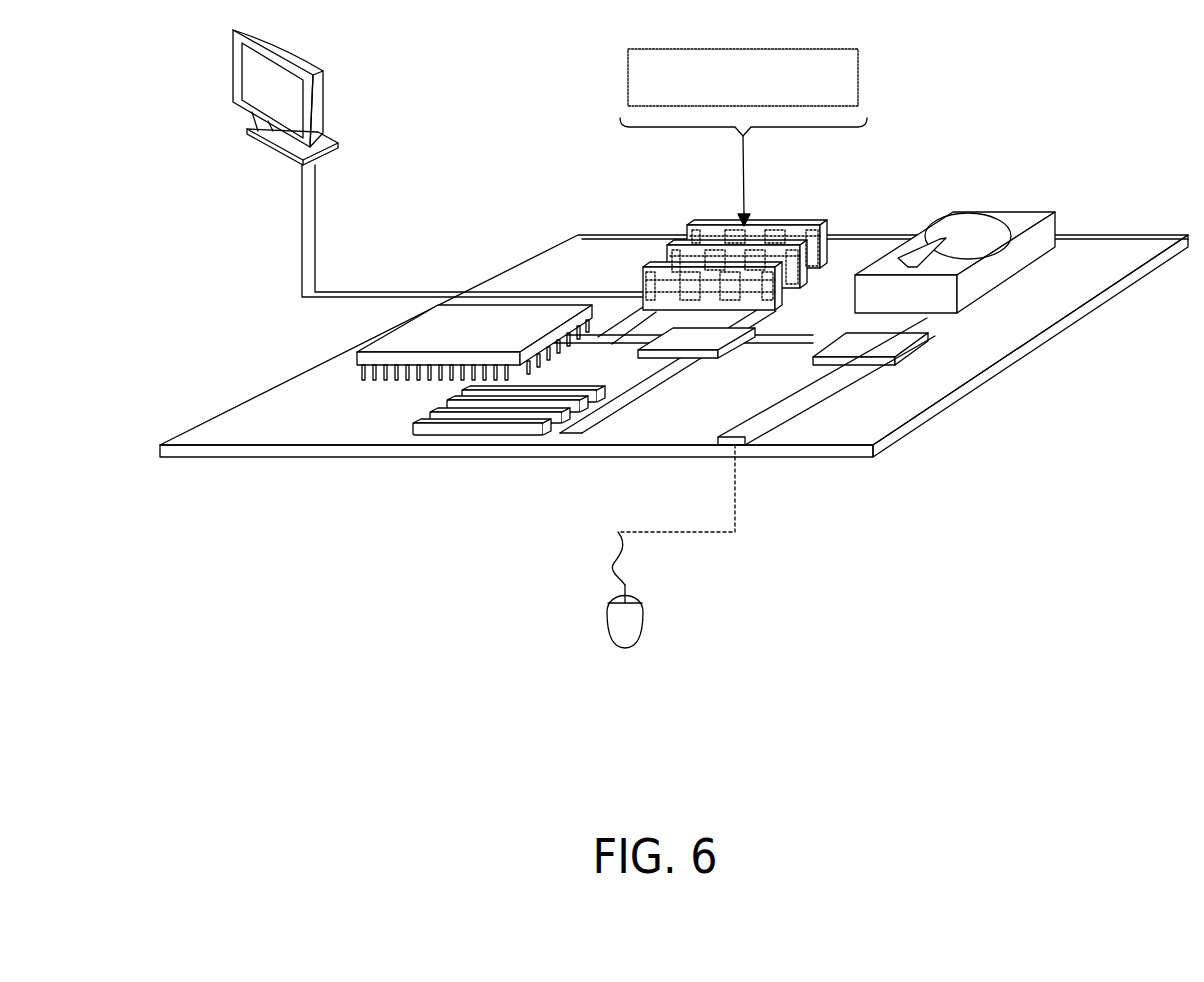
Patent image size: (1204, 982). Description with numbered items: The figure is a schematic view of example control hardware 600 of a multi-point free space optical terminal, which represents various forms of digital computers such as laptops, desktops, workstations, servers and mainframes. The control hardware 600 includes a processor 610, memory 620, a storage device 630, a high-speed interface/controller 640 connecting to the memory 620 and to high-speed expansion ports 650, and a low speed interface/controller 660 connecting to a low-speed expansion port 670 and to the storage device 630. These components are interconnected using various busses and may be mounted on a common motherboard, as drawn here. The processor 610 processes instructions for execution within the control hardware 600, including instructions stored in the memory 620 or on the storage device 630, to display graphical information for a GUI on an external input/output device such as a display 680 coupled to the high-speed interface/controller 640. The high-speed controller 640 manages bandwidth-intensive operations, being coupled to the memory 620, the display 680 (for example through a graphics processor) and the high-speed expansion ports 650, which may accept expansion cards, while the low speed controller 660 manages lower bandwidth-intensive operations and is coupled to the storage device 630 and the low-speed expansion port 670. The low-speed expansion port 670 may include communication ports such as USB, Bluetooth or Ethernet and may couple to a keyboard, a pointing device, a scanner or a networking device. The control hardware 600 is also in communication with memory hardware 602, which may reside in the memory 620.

The control hardware 600 is at (931, 86).
The memory hardware 602 is at (743, 49).
The processor 610 is at (357, 352).
The memory 620 is at (664, 250).
The storage device 630 is at (1003, 212).
The high-speed interface/controller 640 is at (703, 360).
The high-speed expansion ports 650 is at (413, 426).
The low speed interface/controller 660 is at (845, 339).
The low-speed expansion port 670 is at (747, 448).
The display 680 is at (233, 78).